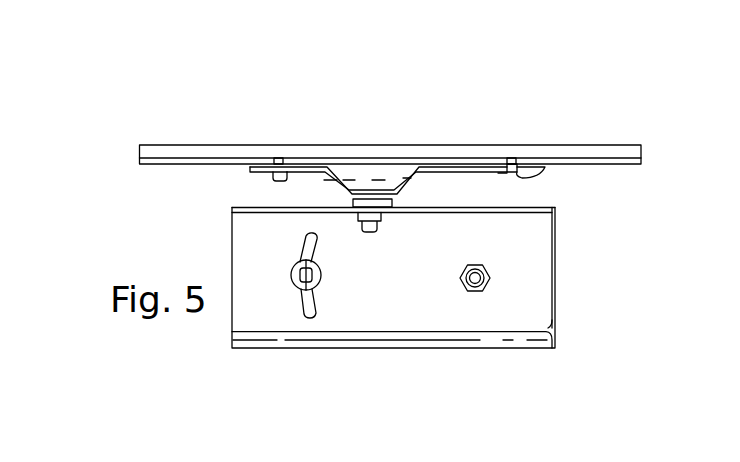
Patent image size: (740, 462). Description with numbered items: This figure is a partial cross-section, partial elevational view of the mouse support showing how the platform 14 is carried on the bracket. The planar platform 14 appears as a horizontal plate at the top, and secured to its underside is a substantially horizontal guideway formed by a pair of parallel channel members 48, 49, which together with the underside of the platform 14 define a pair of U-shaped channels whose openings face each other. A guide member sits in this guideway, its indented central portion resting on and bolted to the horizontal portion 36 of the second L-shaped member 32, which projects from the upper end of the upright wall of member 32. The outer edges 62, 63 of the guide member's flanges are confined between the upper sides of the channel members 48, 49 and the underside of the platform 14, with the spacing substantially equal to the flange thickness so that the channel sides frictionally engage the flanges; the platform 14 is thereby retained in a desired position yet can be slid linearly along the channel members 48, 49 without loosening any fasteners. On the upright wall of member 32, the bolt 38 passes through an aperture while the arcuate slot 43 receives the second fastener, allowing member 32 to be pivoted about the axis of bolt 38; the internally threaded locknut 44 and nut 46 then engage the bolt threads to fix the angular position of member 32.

The platform 14 is at (620, 164).
The second L-shaped member 32 is at (557, 264).
The horizontal portion 36 is at (557, 208).
The bolt 38 is at (481, 266).
The arcuate slot 43 is at (332, 275).
The locknut 44 is at (500, 268).
The nut 46 is at (322, 275).
The channel member 48 is at (273, 178).
The channel member 49 is at (520, 182).
The outer edge of flange 62 is at (279, 167).
The outer edge of flange 63 is at (512, 165).